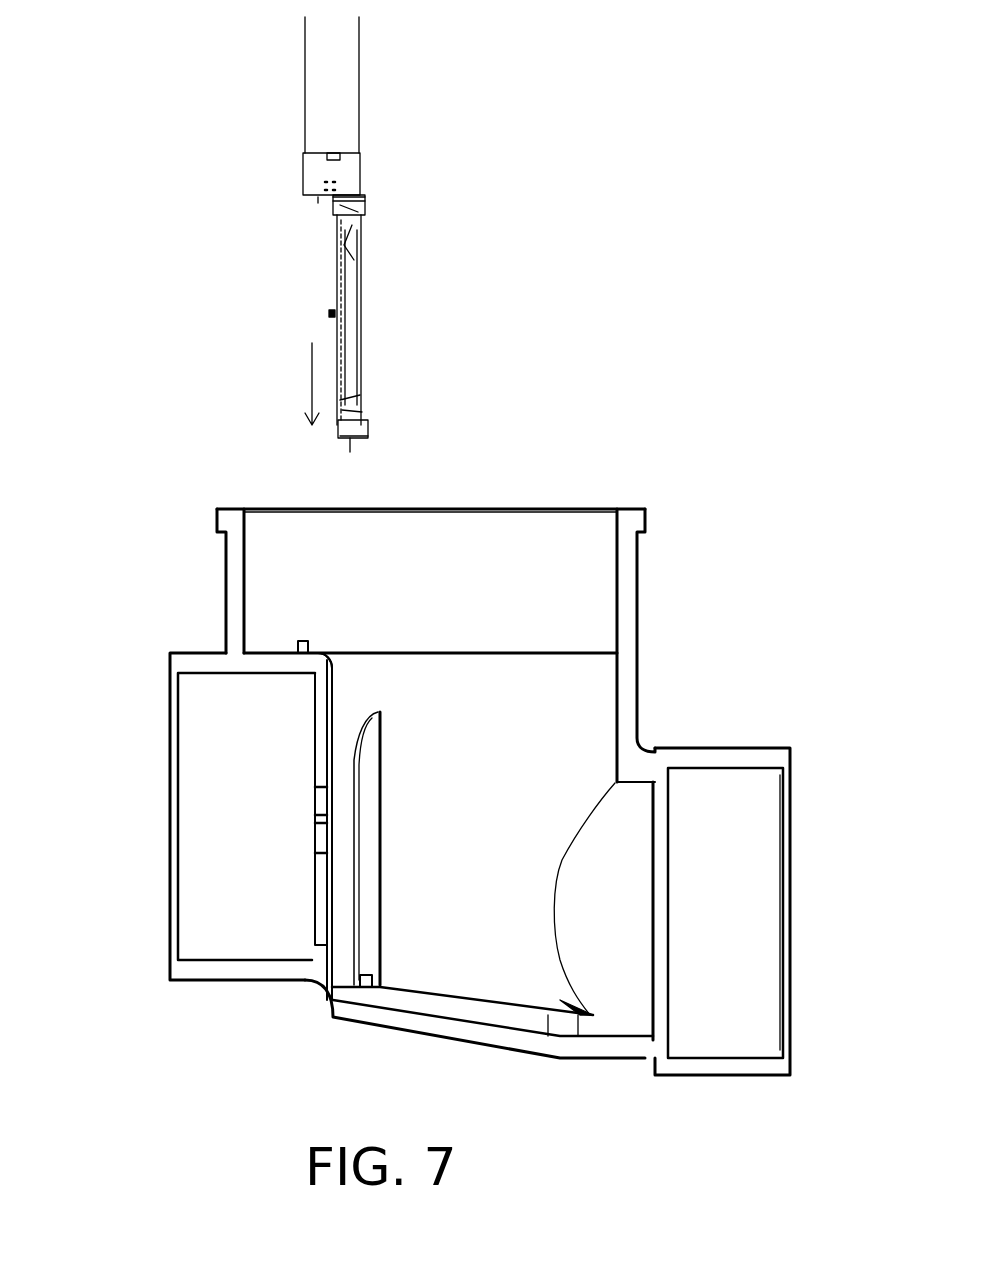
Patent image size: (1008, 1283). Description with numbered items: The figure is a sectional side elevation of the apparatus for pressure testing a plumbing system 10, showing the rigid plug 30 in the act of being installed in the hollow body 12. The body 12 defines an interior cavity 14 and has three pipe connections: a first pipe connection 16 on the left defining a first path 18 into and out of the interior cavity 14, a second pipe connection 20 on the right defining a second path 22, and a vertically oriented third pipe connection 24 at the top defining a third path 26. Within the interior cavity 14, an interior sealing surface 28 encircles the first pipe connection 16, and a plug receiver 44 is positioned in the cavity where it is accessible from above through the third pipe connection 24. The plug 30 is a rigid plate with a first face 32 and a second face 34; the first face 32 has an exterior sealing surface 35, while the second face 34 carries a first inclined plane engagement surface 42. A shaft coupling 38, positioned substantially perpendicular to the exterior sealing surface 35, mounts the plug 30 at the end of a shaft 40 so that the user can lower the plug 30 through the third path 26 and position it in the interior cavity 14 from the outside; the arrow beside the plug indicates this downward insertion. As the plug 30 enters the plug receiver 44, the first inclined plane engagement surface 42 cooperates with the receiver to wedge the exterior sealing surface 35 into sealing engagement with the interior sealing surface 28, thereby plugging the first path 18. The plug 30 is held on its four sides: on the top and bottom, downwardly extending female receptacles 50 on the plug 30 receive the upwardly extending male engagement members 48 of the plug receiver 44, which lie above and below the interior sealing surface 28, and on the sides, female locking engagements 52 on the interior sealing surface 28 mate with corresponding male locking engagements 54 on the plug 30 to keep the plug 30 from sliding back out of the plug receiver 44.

The apparatus for pressure testing a plumbing system 10 is at (150, 190).
The hollow body 12 is at (637, 588).
The interior cavity 14 is at (572, 738).
The first pipe connection 16 is at (208, 975).
The first path 18 is at (190, 928).
The second pipe connection 20 is at (780, 1075).
The second path 22 is at (765, 1020).
The third pipe connection 24 is at (632, 509).
The third path 26 is at (572, 522).
The interior sealing surface 28 is at (333, 682).
The rigid plug 30 is at (363, 243).
The first face 32 is at (328, 292).
The second face 34 is at (363, 300).
The exterior sealing surface 35 is at (336, 365).
The shaft coupling 38 is at (302, 172).
The shaft 40 is at (360, 83).
The first inclined plane engagement surface 42 is at (370, 398).
The plug receiver 44 is at (340, 735).
The male engagement member 48 is at (310, 641).
The female receptacle 50 is at (318, 200).
The female locking engagement 52 is at (313, 815).
The male locking engagement 54 is at (330, 314).